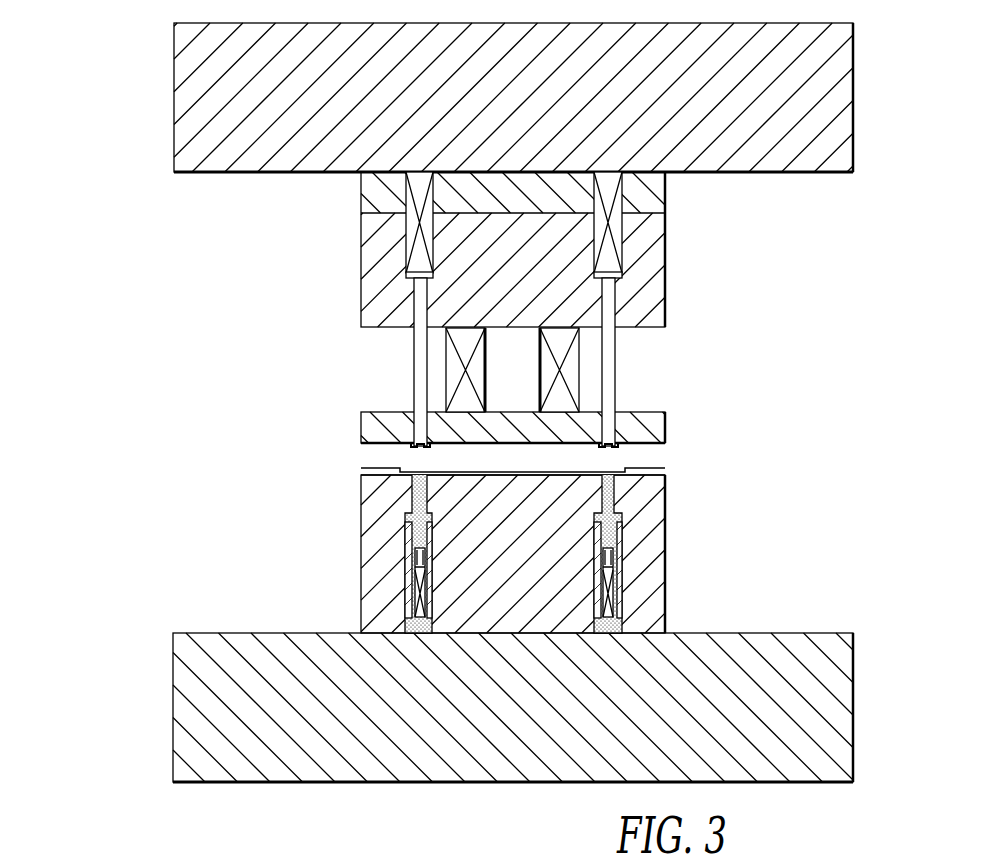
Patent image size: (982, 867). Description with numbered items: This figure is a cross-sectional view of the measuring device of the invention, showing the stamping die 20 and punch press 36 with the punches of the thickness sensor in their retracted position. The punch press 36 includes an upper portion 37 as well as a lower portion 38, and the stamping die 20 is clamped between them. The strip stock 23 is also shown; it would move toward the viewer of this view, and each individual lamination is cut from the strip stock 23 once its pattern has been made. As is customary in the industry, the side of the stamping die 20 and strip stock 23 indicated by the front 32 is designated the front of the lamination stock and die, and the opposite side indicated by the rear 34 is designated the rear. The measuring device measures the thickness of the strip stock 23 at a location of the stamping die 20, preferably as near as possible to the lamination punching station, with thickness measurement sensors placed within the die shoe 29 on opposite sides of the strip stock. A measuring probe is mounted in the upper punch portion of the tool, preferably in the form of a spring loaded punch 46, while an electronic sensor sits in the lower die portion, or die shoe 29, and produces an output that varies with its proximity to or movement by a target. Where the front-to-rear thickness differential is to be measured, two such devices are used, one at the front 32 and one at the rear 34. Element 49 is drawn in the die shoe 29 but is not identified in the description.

The stamping die 20 is at (598, 402).
The strip stock 23 is at (607, 472).
The die shoe 29 is at (665, 598).
The front 32 is at (452, 317).
The rear 34 is at (559, 554).
The punch press 36 is at (505, 402).
The upper portion 37 is at (827, 113).
The lower portion 38 is at (837, 703).
The spring loaded punch 46 is at (414, 375).
The spring-loaded retainer 49 is at (412, 555).